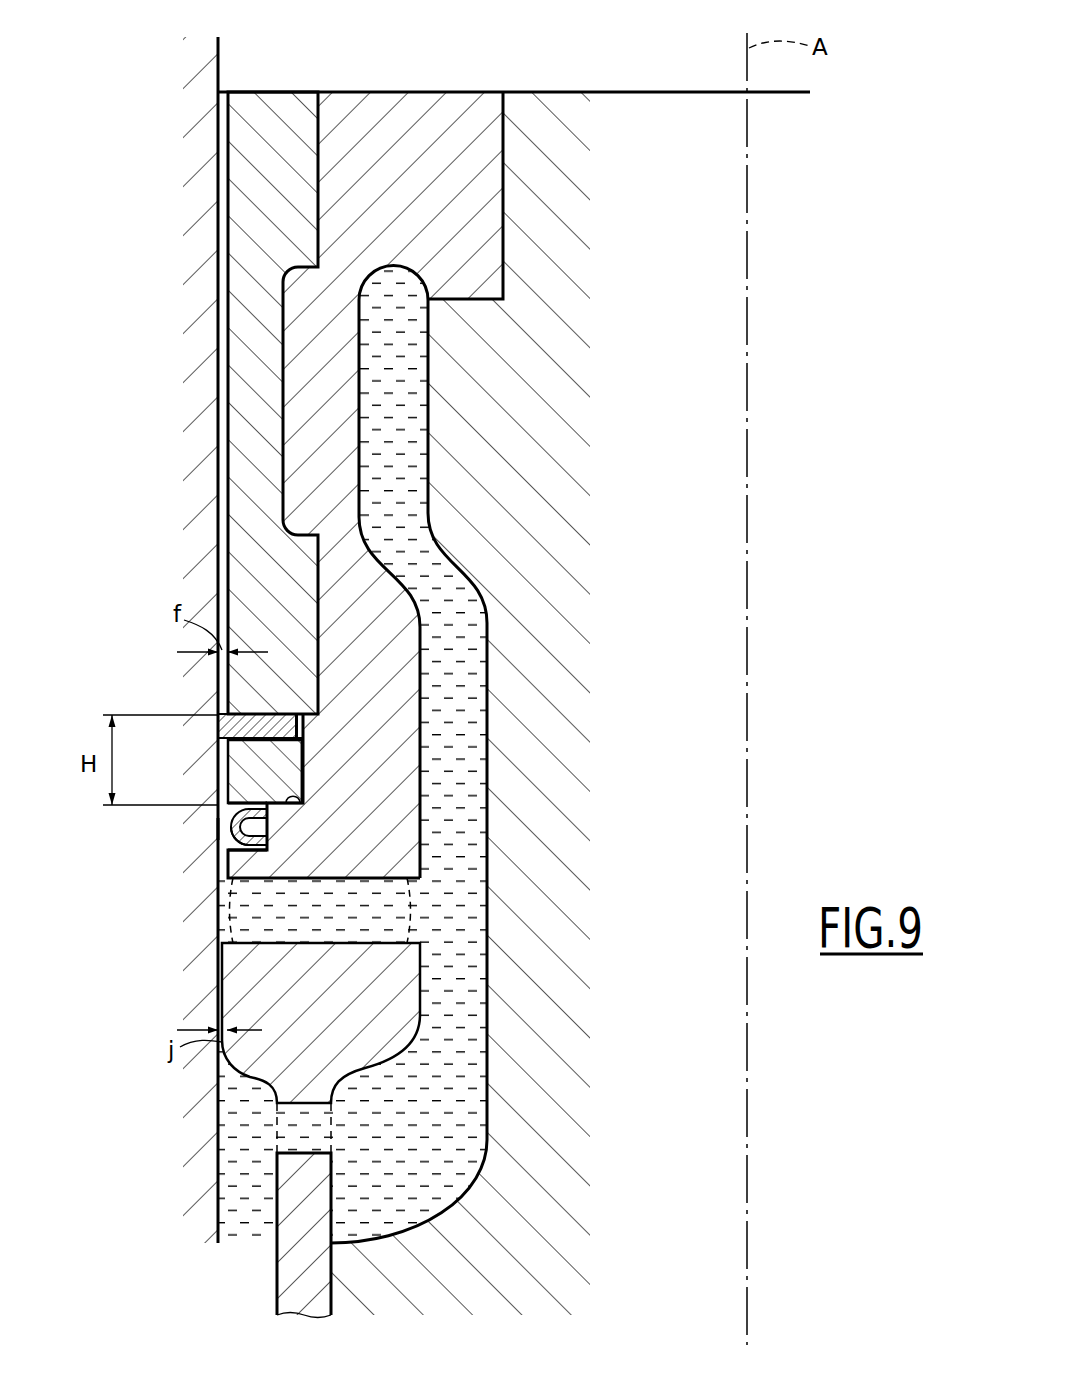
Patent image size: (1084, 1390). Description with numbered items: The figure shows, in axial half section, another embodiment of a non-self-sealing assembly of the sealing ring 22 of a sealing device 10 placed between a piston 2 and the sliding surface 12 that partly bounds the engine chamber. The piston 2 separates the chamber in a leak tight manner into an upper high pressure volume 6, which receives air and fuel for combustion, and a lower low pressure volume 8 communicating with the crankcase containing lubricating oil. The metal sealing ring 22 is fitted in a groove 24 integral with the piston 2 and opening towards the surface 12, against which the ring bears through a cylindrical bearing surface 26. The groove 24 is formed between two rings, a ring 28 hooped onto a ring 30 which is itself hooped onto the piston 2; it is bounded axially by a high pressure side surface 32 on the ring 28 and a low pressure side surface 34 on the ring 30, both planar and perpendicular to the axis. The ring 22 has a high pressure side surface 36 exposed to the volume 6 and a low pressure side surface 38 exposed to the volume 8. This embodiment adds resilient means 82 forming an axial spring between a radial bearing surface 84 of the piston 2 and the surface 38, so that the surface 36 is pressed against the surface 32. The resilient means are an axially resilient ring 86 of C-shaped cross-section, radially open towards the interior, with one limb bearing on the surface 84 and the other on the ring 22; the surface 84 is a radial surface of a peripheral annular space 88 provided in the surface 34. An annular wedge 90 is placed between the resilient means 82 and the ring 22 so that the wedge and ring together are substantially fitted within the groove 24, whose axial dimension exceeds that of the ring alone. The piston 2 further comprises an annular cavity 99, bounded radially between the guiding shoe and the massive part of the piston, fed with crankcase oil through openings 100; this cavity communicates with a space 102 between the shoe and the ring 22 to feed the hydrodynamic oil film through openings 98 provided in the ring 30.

The piston 2 is at (648, 80).
The upper high pressure volume 6 is at (372, 56).
The lower low pressure volume 8 is at (266, 1309).
The sealing device 10 is at (158, 636).
The sliding surface 12 is at (224, 270).
The metal sealing ring 22 is at (303, 729).
The groove 24 is at (303, 733).
The cylindrical bearing surface 26 is at (217, 728).
The ring 28 is at (245, 432).
The ring 30 is at (357, 677).
The high pressure side surface 32 is at (268, 725).
The low pressure side surface 34 is at (292, 800).
The high pressure side surface 36 is at (240, 712).
The low pressure side surface 38 is at (228, 804).
The resilient means 82 is at (218, 837).
The radial bearing surface 84 is at (232, 845).
The axially resilient ring 86 is at (258, 863).
The peripheral annular space 88 is at (252, 827).
The annular wedge 90 is at (288, 778).
The openings 98 is at (308, 935).
The annular cavity 99 is at (450, 822).
The openings 100 is at (290, 1130).
The space 102 is at (227, 768).